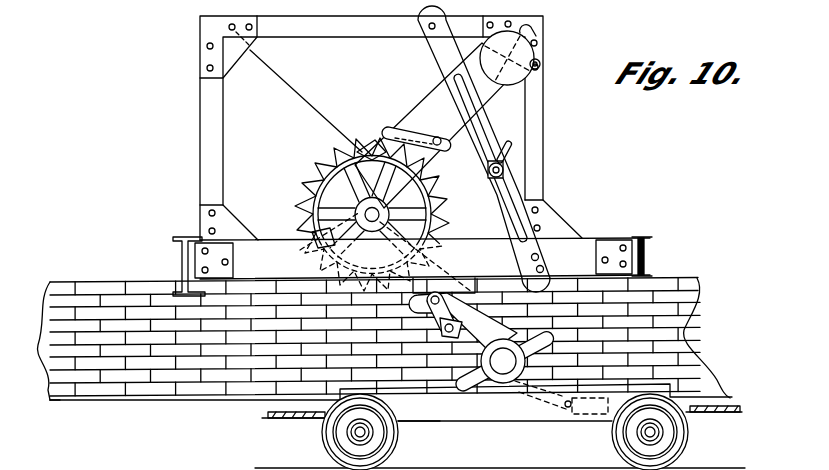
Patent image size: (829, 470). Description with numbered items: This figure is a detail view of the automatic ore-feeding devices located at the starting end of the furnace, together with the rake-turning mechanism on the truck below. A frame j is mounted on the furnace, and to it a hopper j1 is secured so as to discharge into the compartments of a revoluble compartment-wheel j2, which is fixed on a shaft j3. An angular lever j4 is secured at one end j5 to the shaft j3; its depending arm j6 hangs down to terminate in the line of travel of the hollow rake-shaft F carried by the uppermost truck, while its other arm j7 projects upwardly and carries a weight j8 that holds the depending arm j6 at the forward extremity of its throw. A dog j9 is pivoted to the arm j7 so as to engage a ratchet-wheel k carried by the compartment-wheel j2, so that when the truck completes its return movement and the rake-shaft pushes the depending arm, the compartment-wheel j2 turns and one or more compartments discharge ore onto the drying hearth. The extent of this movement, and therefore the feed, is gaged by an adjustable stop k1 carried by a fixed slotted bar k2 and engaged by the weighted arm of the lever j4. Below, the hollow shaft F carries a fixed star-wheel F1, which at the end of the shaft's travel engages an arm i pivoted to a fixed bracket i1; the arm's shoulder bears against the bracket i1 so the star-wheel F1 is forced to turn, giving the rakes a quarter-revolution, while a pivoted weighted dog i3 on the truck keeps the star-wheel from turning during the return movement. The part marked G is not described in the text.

The frame j is at (538, 97).
The hopper j1 is at (367, 143).
The revoluble compartment-wheel j2 is at (320, 205).
The shaft j3 is at (318, 181).
The angular lever j4 is at (455, 180).
The end of angular lever j5 is at (318, 236).
The depending arm j6 is at (470, 285).
The upwardly projecting arm j7 is at (534, 33).
The weight j8 is at (541, 64).
The dog j9 is at (398, 132).
The ratchet-wheel k is at (345, 147).
The adjustable stop k1 is at (488, 171).
The fixed slotted bar k2 is at (522, 192).
The arm i is at (449, 335).
The fixed bracket i1 is at (66, 435).
The pivoted weighted dog i3 is at (495, 433).
The hollow shaft F is at (505, 361).
The star-wheel F1 is at (397, 427).
The chain G is at (561, 397).